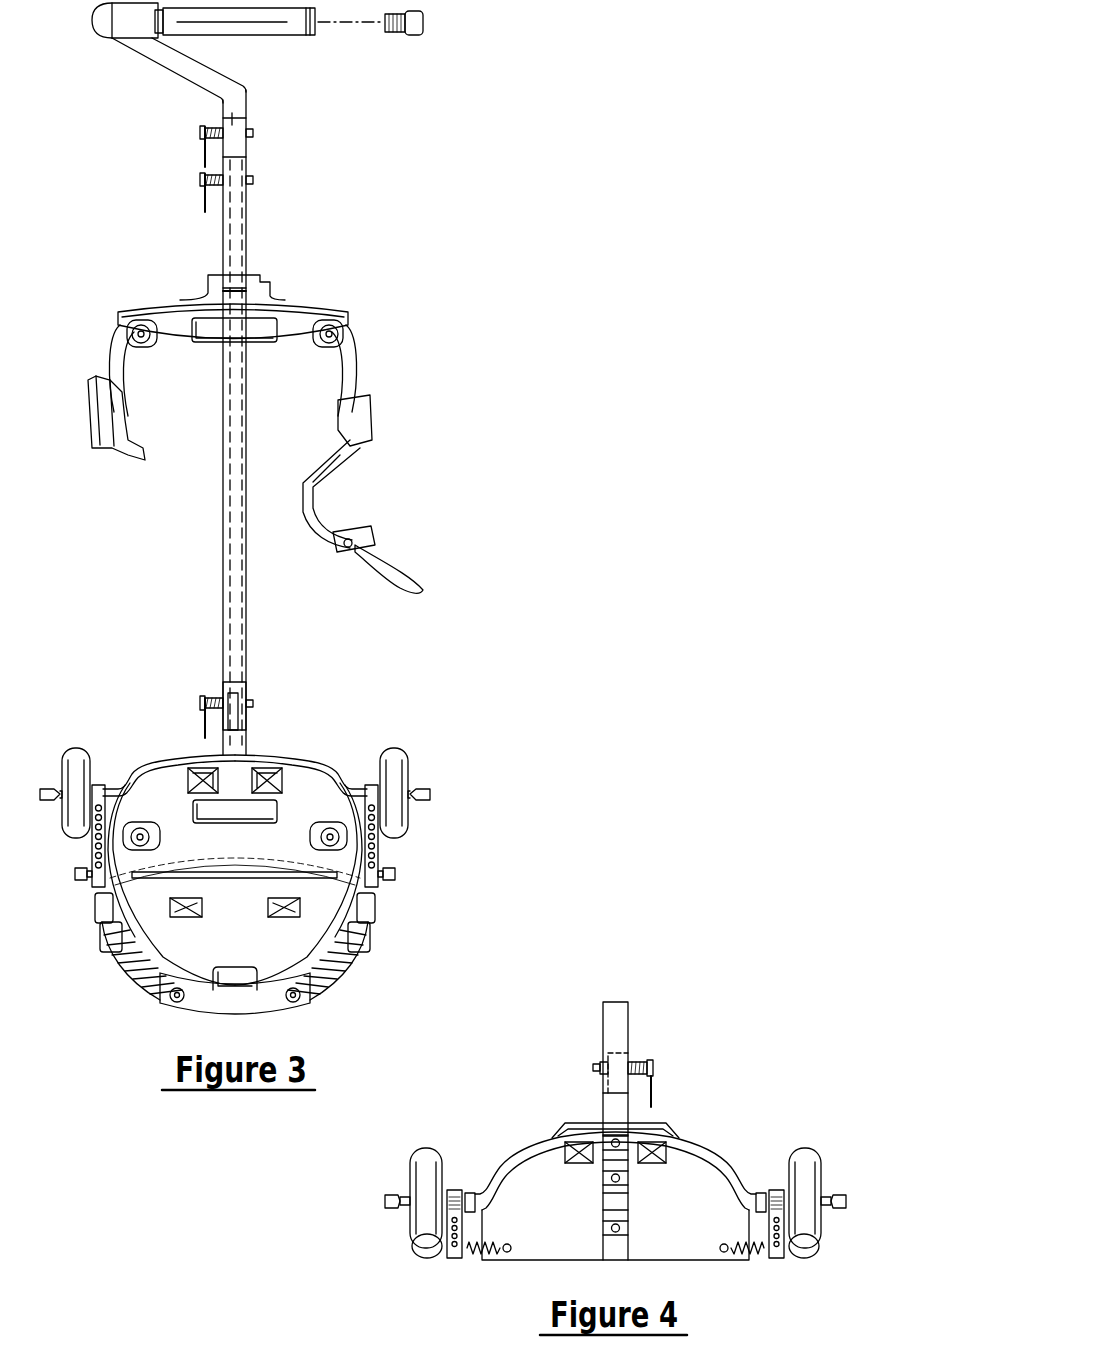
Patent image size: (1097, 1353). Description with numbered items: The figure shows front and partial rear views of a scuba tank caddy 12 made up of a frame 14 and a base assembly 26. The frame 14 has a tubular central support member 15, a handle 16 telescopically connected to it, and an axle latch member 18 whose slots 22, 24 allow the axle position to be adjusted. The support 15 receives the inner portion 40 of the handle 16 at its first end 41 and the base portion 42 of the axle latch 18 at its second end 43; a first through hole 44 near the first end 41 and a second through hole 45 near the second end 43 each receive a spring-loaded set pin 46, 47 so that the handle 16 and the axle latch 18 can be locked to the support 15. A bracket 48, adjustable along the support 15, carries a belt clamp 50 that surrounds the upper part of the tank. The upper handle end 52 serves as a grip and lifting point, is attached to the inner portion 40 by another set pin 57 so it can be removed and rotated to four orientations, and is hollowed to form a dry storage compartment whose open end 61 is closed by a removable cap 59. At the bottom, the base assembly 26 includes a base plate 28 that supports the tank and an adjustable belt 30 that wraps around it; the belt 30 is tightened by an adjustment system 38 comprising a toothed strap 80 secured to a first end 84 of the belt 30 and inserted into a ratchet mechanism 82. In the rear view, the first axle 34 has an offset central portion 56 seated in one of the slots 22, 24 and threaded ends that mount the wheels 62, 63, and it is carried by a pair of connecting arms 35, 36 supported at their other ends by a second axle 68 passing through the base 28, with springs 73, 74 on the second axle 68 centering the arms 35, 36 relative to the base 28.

In FIG. 3, the caddy 12 is at (417, 190).
In FIG. 4, the caddy 12 is at (742, 997).
In FIG. 4, the frame 14 is at (678, 1048).
In FIG. 3, the central support member 15 is at (247, 575).
In FIG. 4, the central support member 15 is at (632, 1010).
In FIG. 3, the handle 16 is at (398, 53).
In FIG. 3, the axle latch member 18 is at (216, 686).
In FIG. 4, the axle latch member 18 is at (593, 1182).
In FIG. 4, the slot 22 is at (625, 1173).
In FIG. 4, the slot 24 is at (625, 1225).
In FIG. 4, the base assembly 26 is at (492, 1173).
In FIG. 3, the base plate 28 is at (258, 953).
In FIG. 4, the base plate 28 is at (702, 1252).
In FIG. 3, the adjustable belt 30 is at (392, 878).
In FIG. 4, the adjustable belt 30 is at (740, 1163).
In FIG. 4, the first axle 34 is at (532, 1157).
In FIG. 4, the connecting arm 35 is at (790, 1233).
In FIG. 4, the connecting arm 36 is at (427, 1237).
In FIG. 3, the adjustment system 38 is at (82, 938).
In FIG. 3, the inner portion of the handle 40 is at (218, 100).
In FIG. 3, the first end of the support 41 is at (247, 140).
In FIG. 3, the base portion of the axle latch 42 is at (237, 718).
In FIG. 4, the base portion of the axle latch 42 is at (607, 1090).
In FIG. 3, the second end of the support 43 is at (233, 731).
In FIG. 4, the second end of the support 43 is at (613, 1113).
In FIG. 3, the first through hole 44 is at (222, 200).
In FIG. 3, the second through hole 45 is at (248, 684).
In FIG. 4, the second through hole 45 is at (632, 1043).
In FIG. 3, the spring-loaded set pin 46 is at (253, 180).
In FIG. 3, the spring-loaded set pin 47 is at (200, 704).
In FIG. 4, the spring-loaded set pin 47 is at (657, 1088).
In FIG. 3, the bracket 48 is at (302, 300).
In FIG. 3, the belt clamp 50 is at (358, 345).
In FIG. 3, the handle end 52 is at (287, 23).
In FIG. 4, the central portion of the first axle 56 is at (692, 1148).
In FIG. 3, the set pin 57 is at (200, 132).
In FIG. 3, the removable cap 59 is at (428, 22).
In FIG. 3, the open end 61 is at (318, 30).
In FIG. 4, the wheel 62 is at (808, 1160).
In FIG. 4, the wheel 63 is at (425, 1160).
In FIG. 4, the second axle 68 is at (508, 1257).
In FIG. 4, the spring 73 is at (760, 1253).
In FIG. 4, the spring 74 is at (475, 1260).
In FIG. 3, the strap 80 is at (128, 958).
In FIG. 3, the ratchet mechanism 82 is at (138, 898).
In FIG. 3, the first end of the belt 84 is at (158, 985).